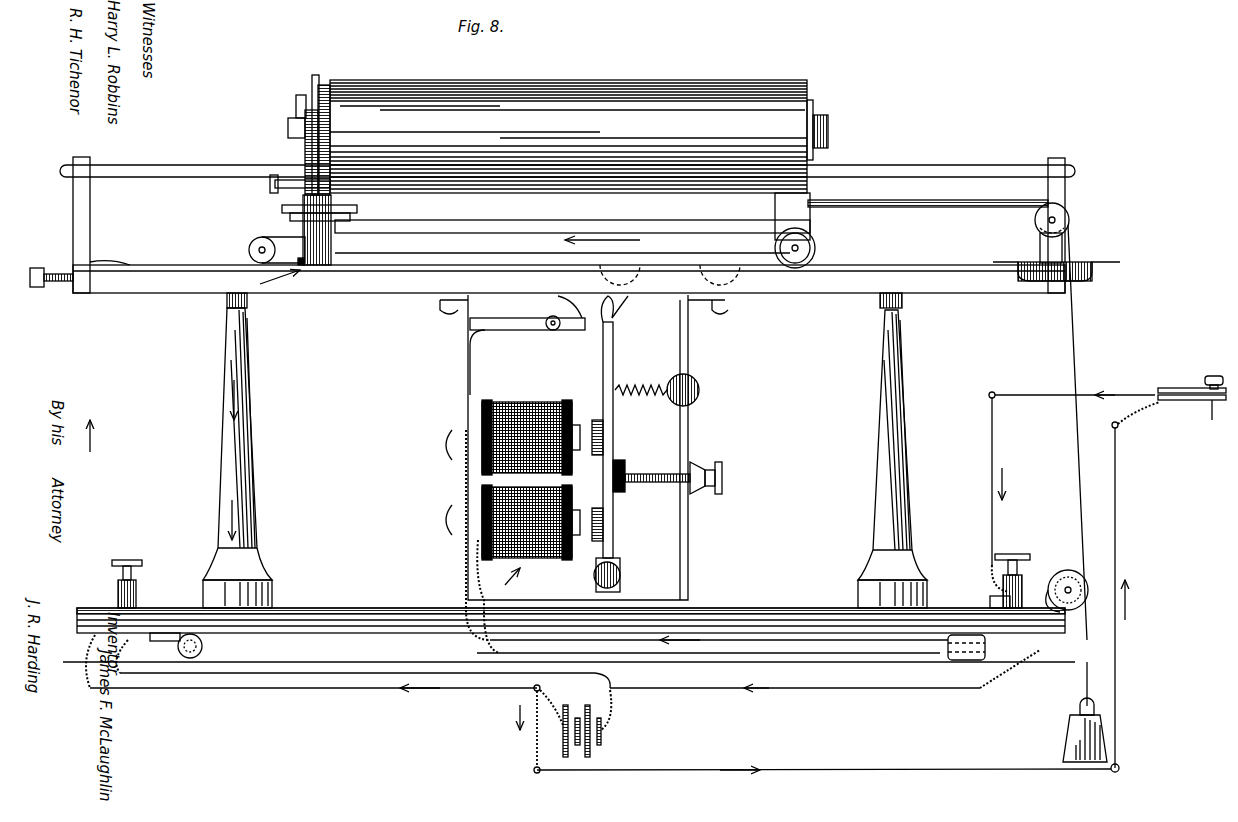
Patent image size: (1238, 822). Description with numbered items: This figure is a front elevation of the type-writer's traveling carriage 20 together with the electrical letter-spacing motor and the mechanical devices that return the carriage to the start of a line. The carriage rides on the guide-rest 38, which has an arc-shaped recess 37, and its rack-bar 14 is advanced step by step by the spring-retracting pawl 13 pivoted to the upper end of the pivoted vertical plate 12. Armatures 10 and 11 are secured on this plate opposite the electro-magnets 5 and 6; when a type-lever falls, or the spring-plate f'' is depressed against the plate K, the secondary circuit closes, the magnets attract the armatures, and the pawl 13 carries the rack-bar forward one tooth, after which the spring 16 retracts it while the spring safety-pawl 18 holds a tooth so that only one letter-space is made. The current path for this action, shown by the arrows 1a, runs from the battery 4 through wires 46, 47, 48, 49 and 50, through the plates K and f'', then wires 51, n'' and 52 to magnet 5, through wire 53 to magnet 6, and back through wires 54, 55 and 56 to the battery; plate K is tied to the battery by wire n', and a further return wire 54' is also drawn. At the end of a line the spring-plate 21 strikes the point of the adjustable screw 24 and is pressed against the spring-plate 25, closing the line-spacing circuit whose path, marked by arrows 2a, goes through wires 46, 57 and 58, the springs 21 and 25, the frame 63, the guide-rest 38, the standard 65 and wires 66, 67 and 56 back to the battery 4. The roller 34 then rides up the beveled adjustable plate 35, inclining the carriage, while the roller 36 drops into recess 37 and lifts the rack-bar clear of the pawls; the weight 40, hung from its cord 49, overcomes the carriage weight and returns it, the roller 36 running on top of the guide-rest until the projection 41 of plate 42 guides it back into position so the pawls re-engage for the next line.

The traveling carriage 20 is at (810, 100).
The roller 34 is at (258, 238).
The spring-plate 25 is at (281, 251).
The frame 63 is at (309, 175).
The adjustable plate 35 is at (98, 264).
The adjustable screw 24 is at (50, 288).
The wire 58 is at (564, 293).
The spring-plate 21 is at (290, 266).
The arc-shaped recess 37 is at (630, 262).
The roller 36 is at (815, 246).
The guide-rest 38 is at (882, 266).
The point or projection 41 is at (1000, 262).
The plate 42 is at (1090, 262).
The wire 49 is at (1104, 465).
The weight 40 is at (1108, 735).
The standard 65 is at (252, 408).
The spring safety-pawl 18 is at (548, 304).
The rack-bar 14 is at (512, 332).
The spring 16 is at (606, 308).
The spring-retracting pawl 13 is at (620, 318).
The electro-magnet 6 is at (531, 429).
The electro-magnet 5 is at (520, 558).
The armature 10 is at (594, 418).
The armature 11 is at (596, 506).
The pivoted vertical plate 12 is at (614, 428).
The wire 53 is at (472, 535).
The wire 54 is at (455, 470).
The wire 52 is at (485, 564).
The wire 51 is at (1072, 387).
The wire n'' is at (986, 495).
The wire n' is at (1128, 598).
The wire 50 is at (1137, 419).
The plate K is at (1192, 408).
The spring-plate f'' is at (1186, 373).
The wire 66 is at (181, 646).
The wire 67 is at (420, 686).
The wire 57 is at (569, 668).
The wire 55 is at (825, 677).
The wire 54' is at (708, 655).
The wire 48 is at (828, 775).
The wire 47 is at (527, 729).
The battery 4 is at (586, 731).
The wire 46 is at (557, 704).
The wire 56 is at (617, 710).
The arrows 1a is at (786, 569).
The arrows 2a is at (265, 488).